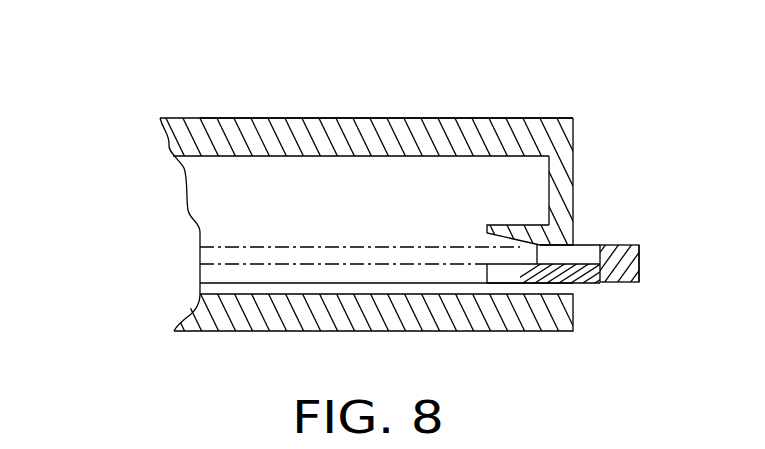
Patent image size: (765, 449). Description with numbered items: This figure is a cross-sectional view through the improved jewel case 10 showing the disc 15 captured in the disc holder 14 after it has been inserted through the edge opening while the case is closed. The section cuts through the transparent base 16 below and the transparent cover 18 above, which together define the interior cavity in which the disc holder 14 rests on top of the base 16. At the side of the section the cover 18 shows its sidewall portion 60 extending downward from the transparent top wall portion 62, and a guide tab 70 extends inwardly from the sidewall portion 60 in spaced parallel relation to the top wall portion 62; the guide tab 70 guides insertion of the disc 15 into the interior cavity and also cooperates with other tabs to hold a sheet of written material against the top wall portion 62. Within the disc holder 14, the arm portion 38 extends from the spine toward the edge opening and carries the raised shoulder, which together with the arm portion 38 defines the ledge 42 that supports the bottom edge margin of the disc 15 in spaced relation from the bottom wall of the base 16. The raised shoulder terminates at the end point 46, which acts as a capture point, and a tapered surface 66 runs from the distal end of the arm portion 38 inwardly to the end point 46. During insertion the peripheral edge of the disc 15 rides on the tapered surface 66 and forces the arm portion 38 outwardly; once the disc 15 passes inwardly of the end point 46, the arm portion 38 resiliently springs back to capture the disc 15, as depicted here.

The jewel case 10 is at (112, 97).
The disc holder 14 is at (650, 240).
The disc 15 is at (216, 246).
The base 16 is at (556, 340).
The cover 18 is at (401, 110).
The arm portion 38 is at (645, 272).
The ledge 42 is at (588, 284).
The end point 46 is at (535, 264).
The sidewall portion 60 is at (574, 182).
The top wall portion 62 is at (332, 123).
The tapered surface 66 is at (600, 250).
The guide tab 70 is at (512, 225).